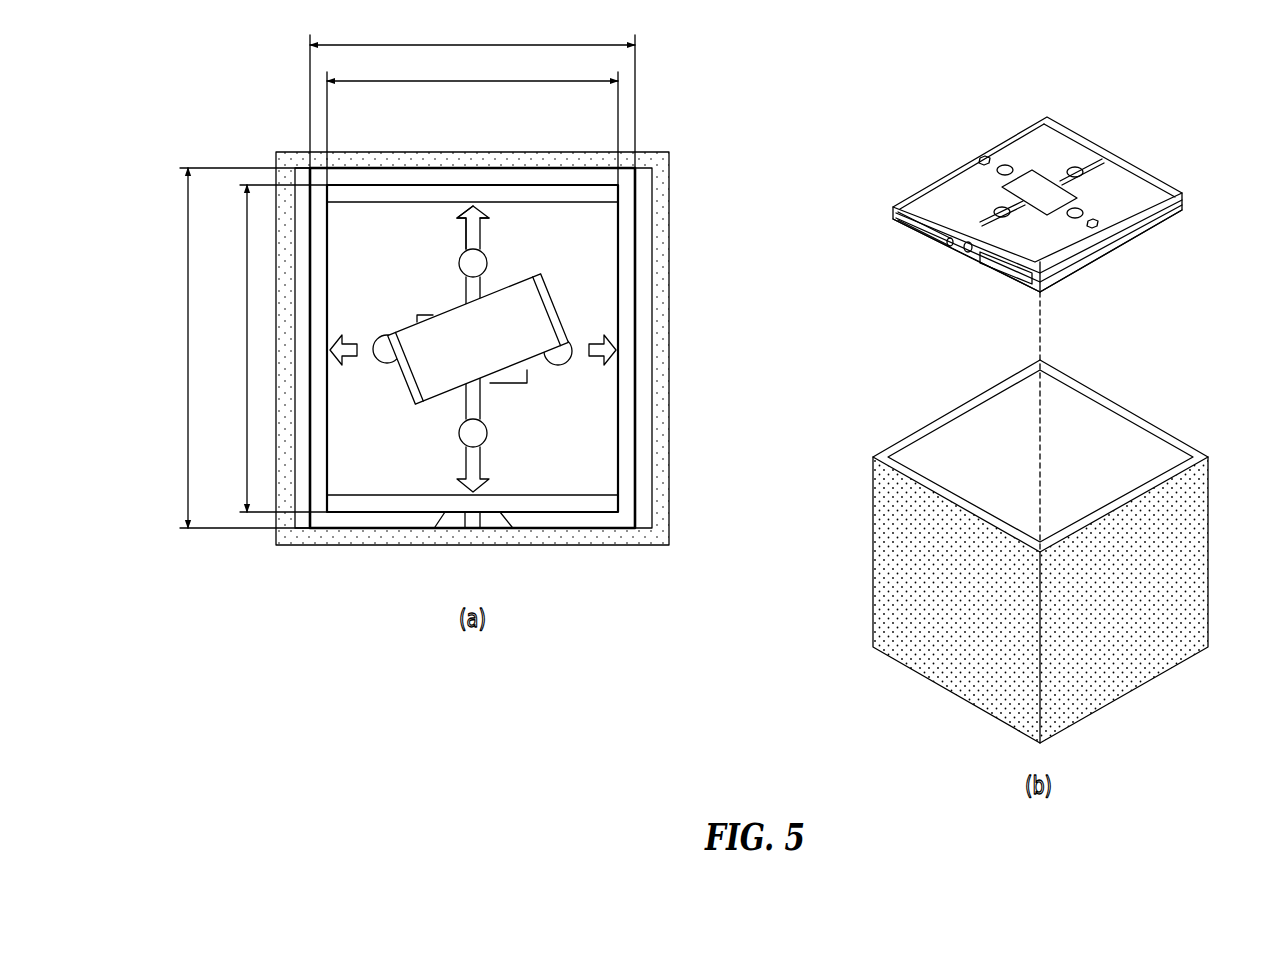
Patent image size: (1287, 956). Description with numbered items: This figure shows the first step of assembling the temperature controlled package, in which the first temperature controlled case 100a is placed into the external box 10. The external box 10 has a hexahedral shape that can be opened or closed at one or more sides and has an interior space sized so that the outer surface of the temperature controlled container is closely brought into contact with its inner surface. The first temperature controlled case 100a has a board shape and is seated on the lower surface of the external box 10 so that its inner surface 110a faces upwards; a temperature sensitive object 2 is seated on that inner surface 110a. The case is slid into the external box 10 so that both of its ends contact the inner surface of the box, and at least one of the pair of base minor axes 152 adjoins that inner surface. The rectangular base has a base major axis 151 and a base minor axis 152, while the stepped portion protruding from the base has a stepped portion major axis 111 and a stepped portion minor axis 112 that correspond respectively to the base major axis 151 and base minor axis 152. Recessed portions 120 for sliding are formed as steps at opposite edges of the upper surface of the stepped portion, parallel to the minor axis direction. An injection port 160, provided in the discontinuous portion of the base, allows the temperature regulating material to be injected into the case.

The external box 10 is at (662, 345).
The first temperature controlled case 100a is at (389, 178).
The inner surface of the temperature controlled case 110a is at (375, 465).
The recessed portion for sliding 120 is at (582, 190).
The injection port 160 is at (473, 520).
The temperature sensitive object 2 is at (513, 272).
The base minor axis 152 is at (472, 94).
The base major axis 151 is at (226, 348).
The stepped portion minor axis 112 is at (472, 120).
The stepped portion major axis 111 is at (264, 348).